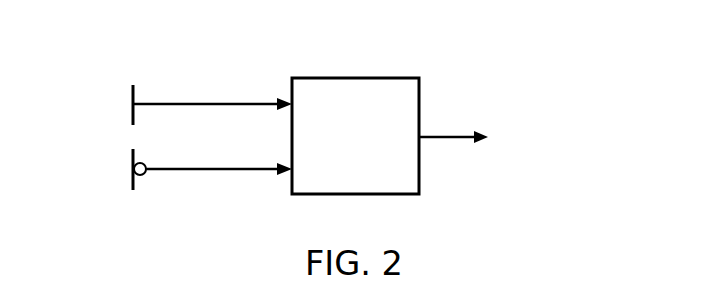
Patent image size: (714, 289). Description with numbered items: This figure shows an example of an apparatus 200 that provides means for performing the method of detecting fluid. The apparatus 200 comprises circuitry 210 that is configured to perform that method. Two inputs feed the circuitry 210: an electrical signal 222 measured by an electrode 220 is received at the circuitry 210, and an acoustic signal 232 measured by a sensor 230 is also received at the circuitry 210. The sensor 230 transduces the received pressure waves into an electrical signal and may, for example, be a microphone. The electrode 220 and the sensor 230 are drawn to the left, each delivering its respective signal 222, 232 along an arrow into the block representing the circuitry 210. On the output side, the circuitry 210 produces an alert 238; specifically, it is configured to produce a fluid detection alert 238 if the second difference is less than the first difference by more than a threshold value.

The apparatus 200 is at (497, 54).
The circuitry 210 is at (364, 77).
The electrode 220 is at (134, 102).
The electrical signal 222 is at (100, 97).
The sensor 230 is at (144, 175).
The acoustic signal 232 is at (99, 177).
The alert 238 is at (451, 134).